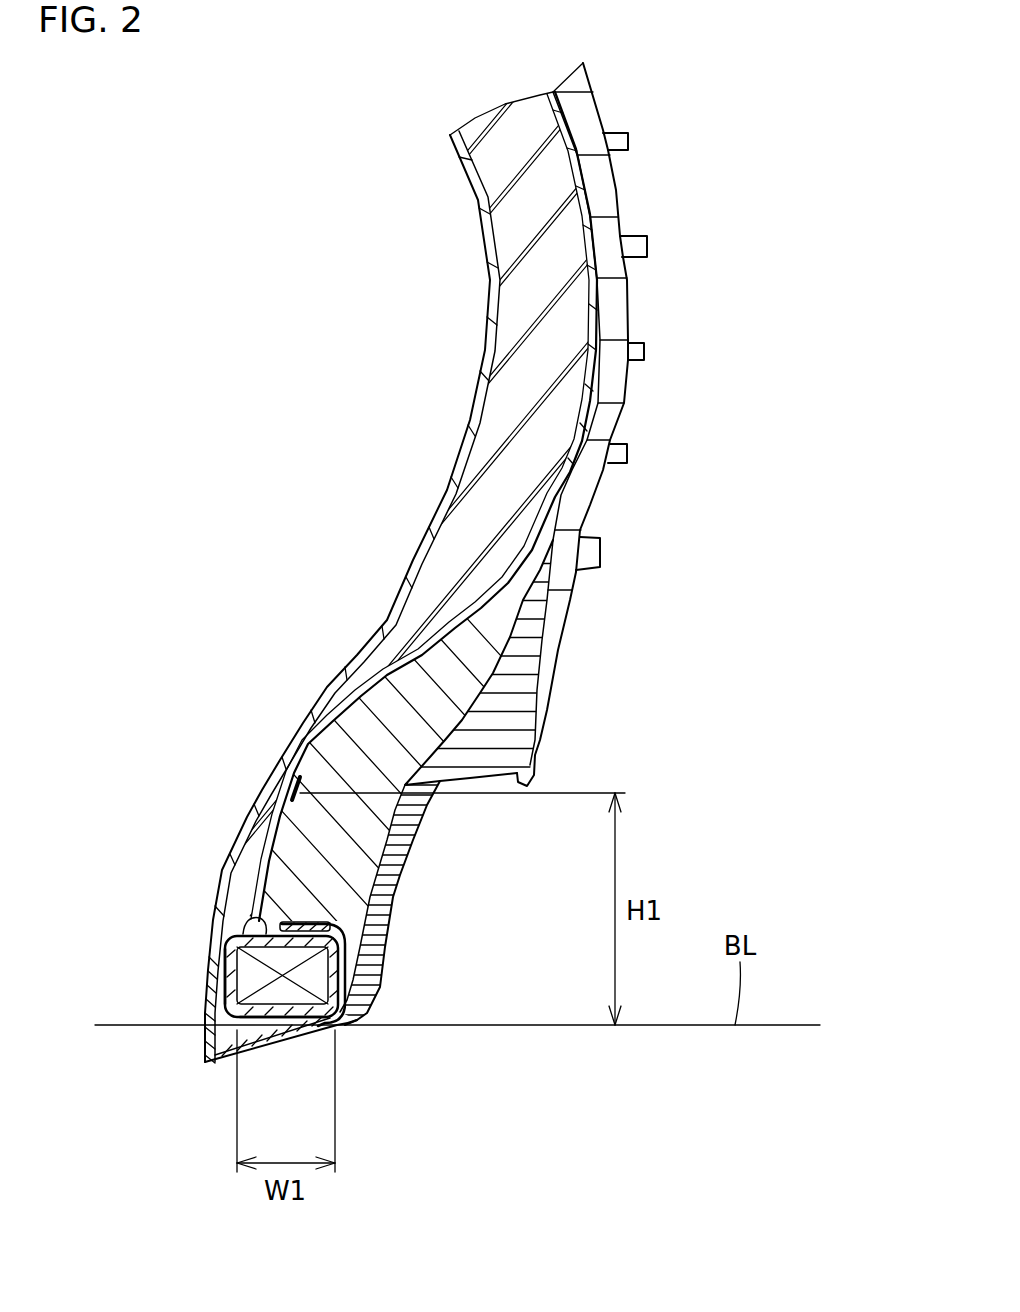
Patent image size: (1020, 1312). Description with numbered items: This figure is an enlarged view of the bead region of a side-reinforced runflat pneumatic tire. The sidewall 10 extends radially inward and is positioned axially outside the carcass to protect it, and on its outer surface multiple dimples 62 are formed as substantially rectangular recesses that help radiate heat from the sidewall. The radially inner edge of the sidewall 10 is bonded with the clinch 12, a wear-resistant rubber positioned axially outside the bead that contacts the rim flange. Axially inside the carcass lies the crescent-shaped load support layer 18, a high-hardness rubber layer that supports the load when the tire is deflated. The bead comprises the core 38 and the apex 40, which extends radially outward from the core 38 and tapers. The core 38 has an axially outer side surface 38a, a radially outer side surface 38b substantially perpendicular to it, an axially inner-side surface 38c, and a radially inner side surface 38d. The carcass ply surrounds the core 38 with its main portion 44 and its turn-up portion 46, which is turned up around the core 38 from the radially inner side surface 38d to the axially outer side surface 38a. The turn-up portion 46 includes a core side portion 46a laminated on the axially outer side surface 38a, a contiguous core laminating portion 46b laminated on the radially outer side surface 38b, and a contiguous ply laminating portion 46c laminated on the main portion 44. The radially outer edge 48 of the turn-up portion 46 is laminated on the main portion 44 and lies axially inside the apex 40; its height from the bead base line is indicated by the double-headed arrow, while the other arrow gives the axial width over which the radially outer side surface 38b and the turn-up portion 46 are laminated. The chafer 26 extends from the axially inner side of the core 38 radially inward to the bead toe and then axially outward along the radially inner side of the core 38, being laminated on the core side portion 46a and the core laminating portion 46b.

The sidewall 10 is at (615, 388).
The clinch 12 is at (528, 680).
The load support layer 18 is at (510, 305).
The chafer 26 is at (205, 1047).
The core 38 is at (293, 1000).
The axially outer side surface 38a is at (355, 975).
The radially outer side surface 38b is at (255, 928).
The axially inner-side surface 38c is at (228, 985).
The radially inner side surface 38d is at (265, 1017).
The apex 40 is at (372, 827).
The main portion 44 is at (243, 872).
The turn-up portion 46 is at (383, 855).
The core side portion 46a is at (380, 998).
The core laminating portion 46b is at (305, 936).
The ply laminating portion 46c is at (276, 823).
The edge 48 is at (292, 785).
The dimple 62 is at (625, 190).